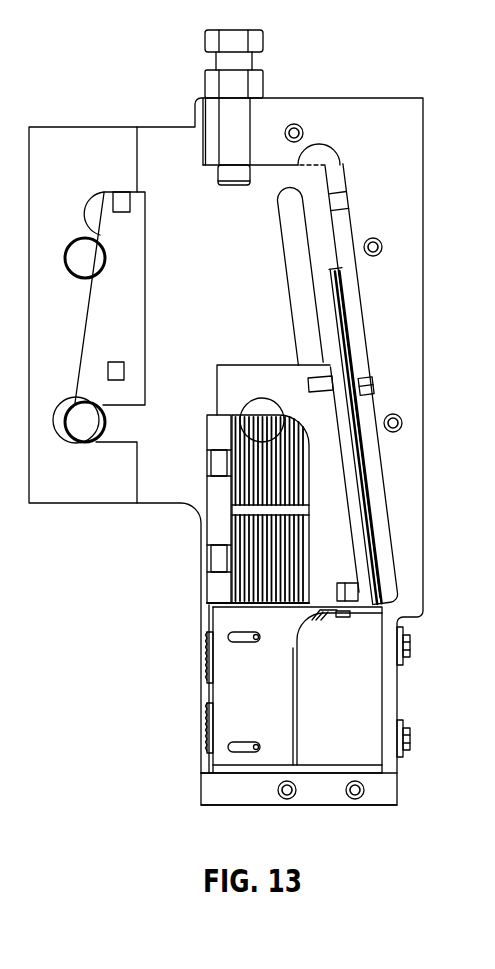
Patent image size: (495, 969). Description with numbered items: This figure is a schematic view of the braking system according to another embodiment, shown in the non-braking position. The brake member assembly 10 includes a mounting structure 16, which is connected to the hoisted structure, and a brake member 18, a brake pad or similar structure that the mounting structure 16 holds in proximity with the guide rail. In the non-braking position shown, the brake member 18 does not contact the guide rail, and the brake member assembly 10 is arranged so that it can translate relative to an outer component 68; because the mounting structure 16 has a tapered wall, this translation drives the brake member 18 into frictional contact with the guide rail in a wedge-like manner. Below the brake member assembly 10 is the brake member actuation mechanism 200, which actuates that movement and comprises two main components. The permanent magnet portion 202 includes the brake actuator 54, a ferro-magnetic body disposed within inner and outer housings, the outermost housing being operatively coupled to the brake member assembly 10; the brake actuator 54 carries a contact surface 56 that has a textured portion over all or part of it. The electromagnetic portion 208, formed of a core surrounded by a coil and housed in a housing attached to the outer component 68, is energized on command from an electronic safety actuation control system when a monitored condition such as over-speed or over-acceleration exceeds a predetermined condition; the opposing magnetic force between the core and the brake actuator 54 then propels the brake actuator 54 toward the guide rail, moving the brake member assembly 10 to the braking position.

The brake member assembly 10 is at (247, 360).
The mounting structure 16 is at (232, 388).
The brake member 18 is at (215, 588).
The contact surface 56 is at (209, 662).
The brake member actuation mechanism 200 is at (200, 695).
The brake actuator 54 is at (200, 733).
The permanent magnet portion 202 is at (268, 757).
The electromagnetic portion 208 is at (378, 692).
The outer component 68 is at (388, 790).